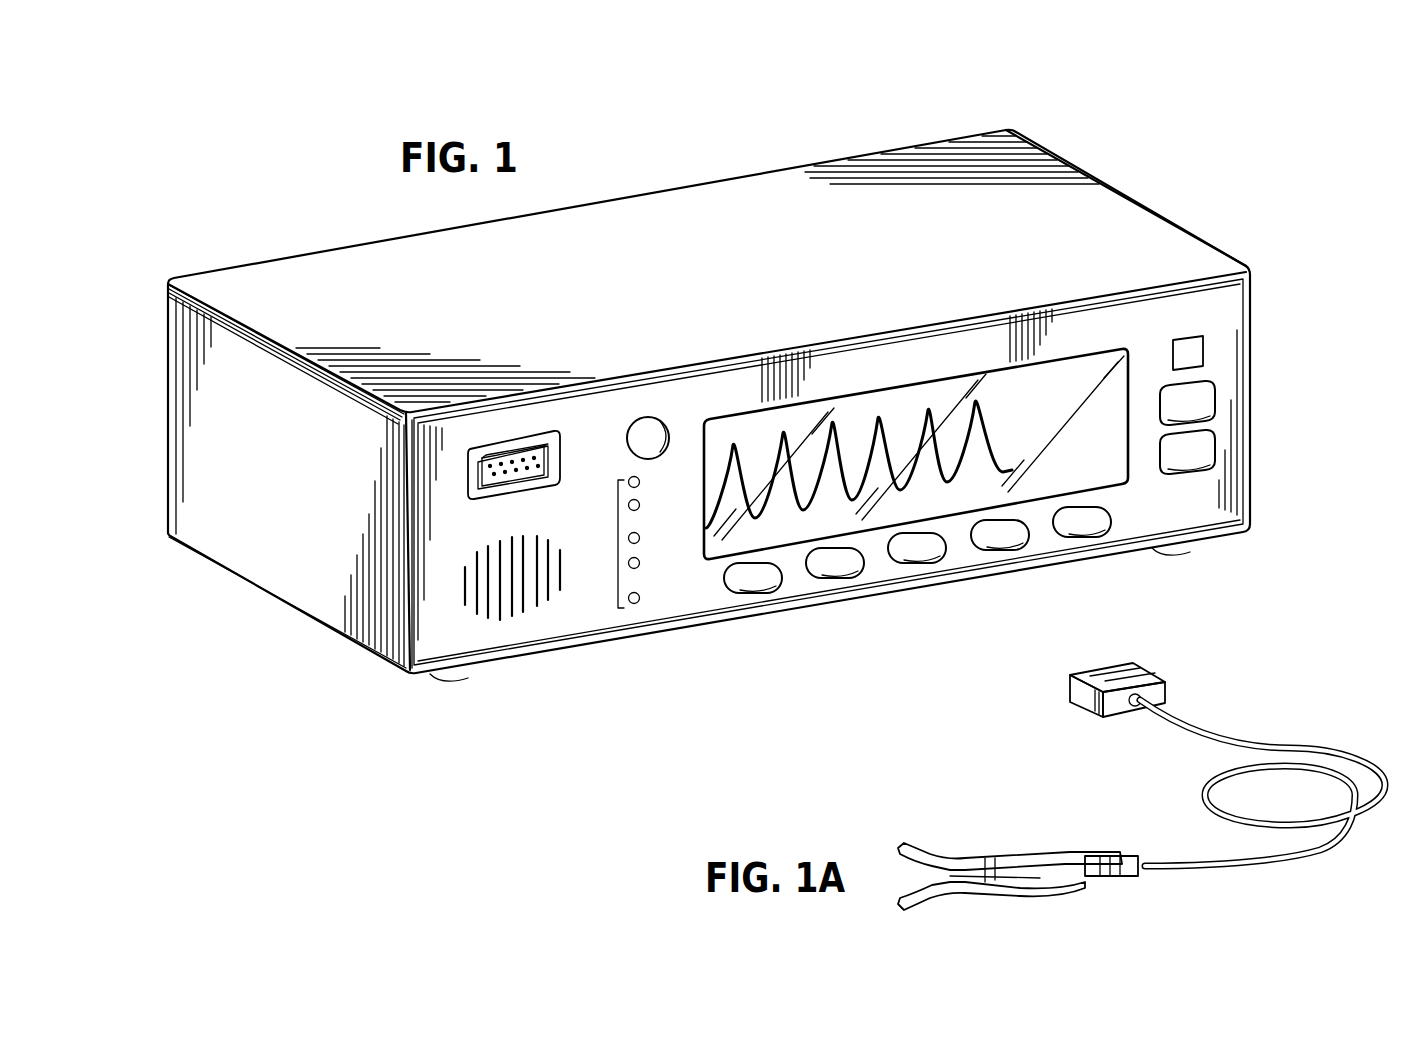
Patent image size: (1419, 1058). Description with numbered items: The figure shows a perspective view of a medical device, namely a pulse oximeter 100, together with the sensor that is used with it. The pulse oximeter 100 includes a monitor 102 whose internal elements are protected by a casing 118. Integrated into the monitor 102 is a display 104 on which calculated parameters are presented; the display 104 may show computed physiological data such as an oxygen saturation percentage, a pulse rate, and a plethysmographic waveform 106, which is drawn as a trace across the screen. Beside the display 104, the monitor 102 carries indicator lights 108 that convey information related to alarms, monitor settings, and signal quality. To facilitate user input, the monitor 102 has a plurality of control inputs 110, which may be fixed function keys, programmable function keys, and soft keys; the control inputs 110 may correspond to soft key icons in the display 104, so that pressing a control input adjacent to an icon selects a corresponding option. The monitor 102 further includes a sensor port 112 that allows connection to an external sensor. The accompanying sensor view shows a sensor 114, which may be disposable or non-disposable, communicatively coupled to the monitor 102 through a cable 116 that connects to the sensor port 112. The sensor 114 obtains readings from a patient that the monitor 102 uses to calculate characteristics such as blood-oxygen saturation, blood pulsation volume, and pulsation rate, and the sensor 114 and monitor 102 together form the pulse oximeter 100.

In FIG. 1, the pulse oximeter 100 is at (709, 371).
In FIG. 1, the monitor 102 is at (326, 234).
In FIG. 1, the display 104 is at (983, 393).
In FIG. 1, the plethysmographic waveform 106 is at (877, 423).
In FIG. 1, the indicator lights 108 is at (617, 545).
In FIG. 1, the control inputs 110 is at (648, 425).
In FIG. 1, the sensor port 112 is at (512, 455).
In FIG. 1A, the sensor 114 is at (966, 852).
In FIG. 1, the cable 116 is at (1278, 734).
In FIG. 1, the casing 118 is at (1153, 218).